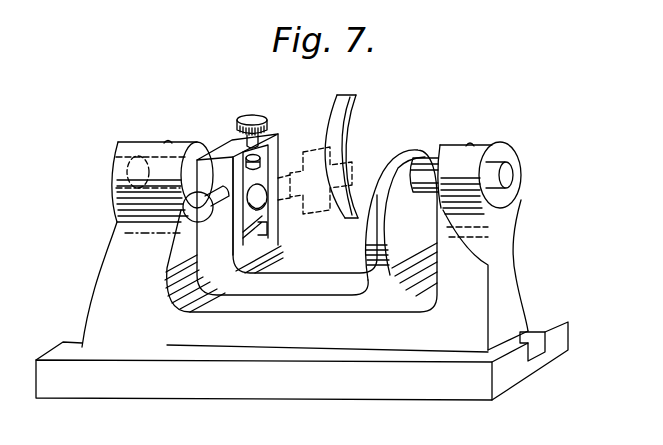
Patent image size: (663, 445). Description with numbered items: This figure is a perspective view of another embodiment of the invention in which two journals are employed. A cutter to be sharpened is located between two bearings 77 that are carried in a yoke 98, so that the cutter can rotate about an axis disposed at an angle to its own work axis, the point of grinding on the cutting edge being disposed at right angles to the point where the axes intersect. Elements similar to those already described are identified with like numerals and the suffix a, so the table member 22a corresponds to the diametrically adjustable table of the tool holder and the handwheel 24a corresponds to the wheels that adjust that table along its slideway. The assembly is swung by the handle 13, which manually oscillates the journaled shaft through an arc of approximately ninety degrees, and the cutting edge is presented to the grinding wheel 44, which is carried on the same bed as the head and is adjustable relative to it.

The bearings 77 is at (145, 146).
The yoke 98 is at (303, 260).
The table member 22a is at (250, 211).
The handwheel 24a is at (254, 117).
The grinding wheel 44 is at (356, 118).
The handle 13 is at (183, 213).